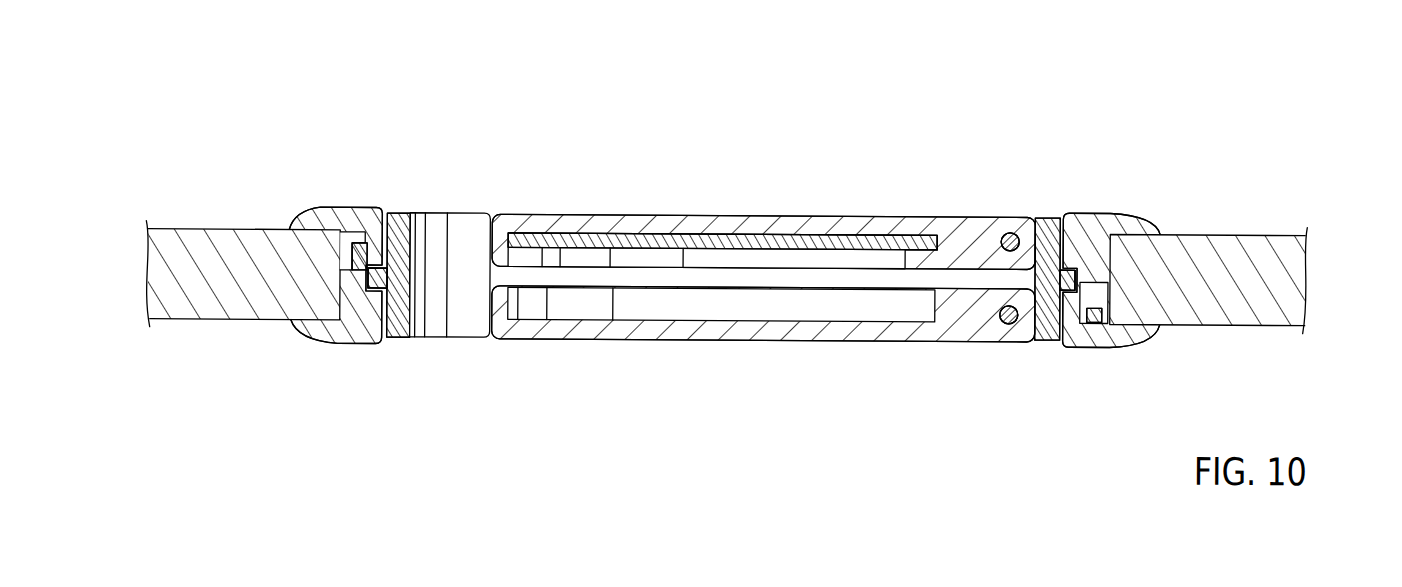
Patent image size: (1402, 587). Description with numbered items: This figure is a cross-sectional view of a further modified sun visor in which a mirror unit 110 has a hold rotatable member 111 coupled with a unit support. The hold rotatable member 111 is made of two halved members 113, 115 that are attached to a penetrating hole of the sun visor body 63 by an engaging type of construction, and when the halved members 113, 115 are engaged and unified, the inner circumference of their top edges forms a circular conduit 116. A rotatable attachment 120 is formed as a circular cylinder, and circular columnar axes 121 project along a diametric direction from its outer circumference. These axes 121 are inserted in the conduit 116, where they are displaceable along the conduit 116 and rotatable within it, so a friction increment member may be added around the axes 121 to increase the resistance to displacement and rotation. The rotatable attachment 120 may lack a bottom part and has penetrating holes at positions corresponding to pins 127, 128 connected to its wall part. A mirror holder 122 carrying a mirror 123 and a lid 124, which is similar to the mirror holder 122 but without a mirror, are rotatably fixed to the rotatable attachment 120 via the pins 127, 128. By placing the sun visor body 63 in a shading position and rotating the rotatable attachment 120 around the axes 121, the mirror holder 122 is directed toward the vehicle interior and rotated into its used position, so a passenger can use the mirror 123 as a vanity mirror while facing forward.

The mirror unit 110 is at (685, 424).
The hold rotatable member 111 is at (337, 99).
The halved member 113 is at (252, 248).
The halved member 115 is at (350, 219).
The circular conduit 116 is at (396, 300).
The rotatable attachment 120 is at (1043, 341).
The circular columnar axes 121 is at (396, 300).
The mirror holder 122 is at (818, 229).
The mirror 123 is at (660, 237).
The lid 124 is at (767, 330).
The pin 127 is at (1007, 231).
The pin 128 is at (1000, 322).
The sun visor body 63 is at (1238, 312).